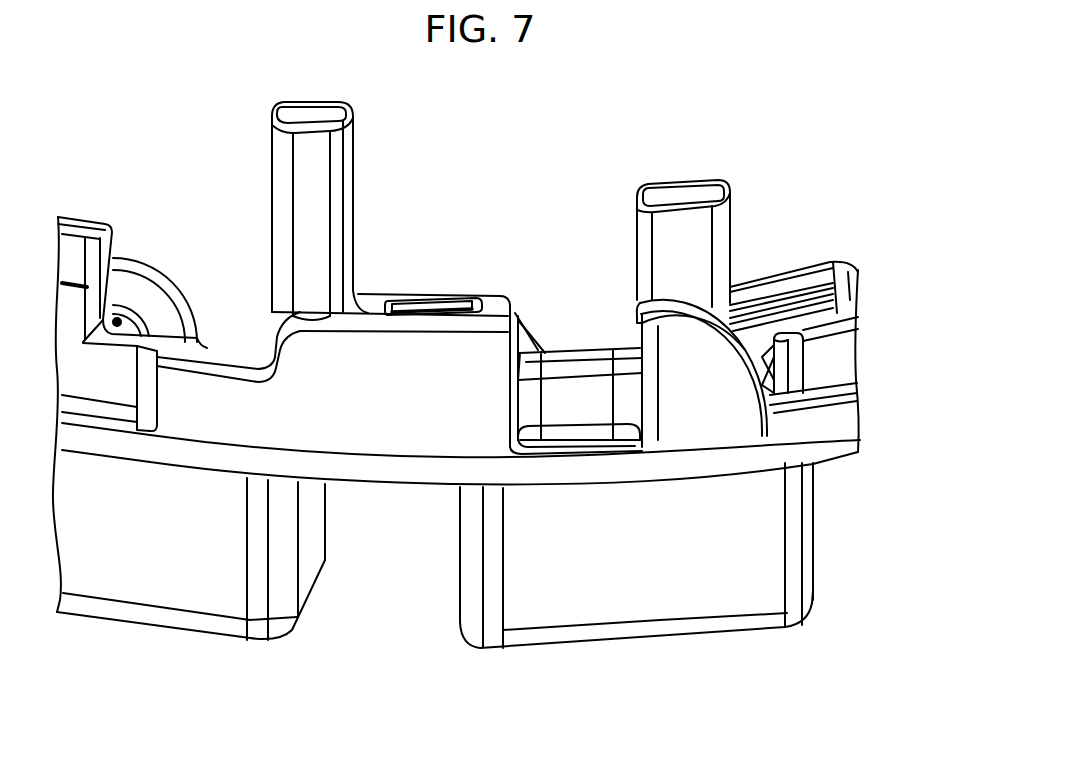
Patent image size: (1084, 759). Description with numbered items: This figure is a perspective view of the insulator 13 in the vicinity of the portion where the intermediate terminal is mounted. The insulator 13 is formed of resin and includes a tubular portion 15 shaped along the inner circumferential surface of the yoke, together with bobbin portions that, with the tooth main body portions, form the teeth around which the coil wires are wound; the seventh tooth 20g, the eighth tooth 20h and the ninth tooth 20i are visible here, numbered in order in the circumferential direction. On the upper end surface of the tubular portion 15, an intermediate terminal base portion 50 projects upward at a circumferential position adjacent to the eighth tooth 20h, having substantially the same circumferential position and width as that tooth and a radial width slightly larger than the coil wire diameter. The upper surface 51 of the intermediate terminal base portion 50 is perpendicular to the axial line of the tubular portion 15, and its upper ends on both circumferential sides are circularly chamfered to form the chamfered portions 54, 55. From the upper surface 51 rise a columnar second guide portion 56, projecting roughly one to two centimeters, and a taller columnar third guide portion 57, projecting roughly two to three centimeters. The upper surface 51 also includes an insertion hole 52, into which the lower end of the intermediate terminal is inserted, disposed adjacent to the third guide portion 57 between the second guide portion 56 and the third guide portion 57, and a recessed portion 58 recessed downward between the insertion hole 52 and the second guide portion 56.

The insulator 13 is at (866, 404).
The tubular portion 15 is at (843, 338).
The seventh tooth 20g is at (810, 300).
The eighth tooth 20h is at (524, 342).
The ninth tooth 20i is at (122, 282).
The intermediate terminal base portion 50 is at (391, 410).
The upper surface 51 is at (490, 310).
The insertion hole 52 is at (409, 306).
The chamfered portion 54 is at (720, 330).
The chamfered portion 55 is at (278, 322).
The second guide portion 56 is at (683, 186).
The third guide portion 57 is at (308, 110).
The recessed portion 58 is at (587, 337).